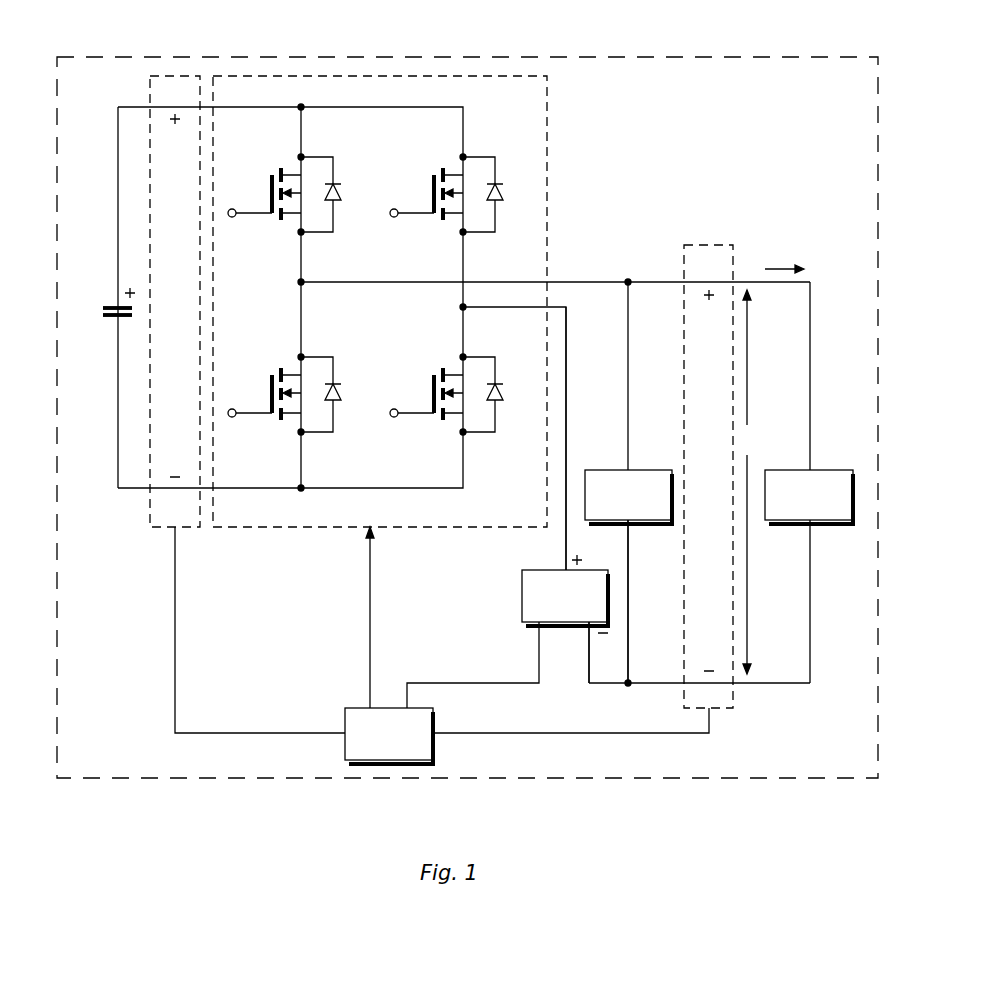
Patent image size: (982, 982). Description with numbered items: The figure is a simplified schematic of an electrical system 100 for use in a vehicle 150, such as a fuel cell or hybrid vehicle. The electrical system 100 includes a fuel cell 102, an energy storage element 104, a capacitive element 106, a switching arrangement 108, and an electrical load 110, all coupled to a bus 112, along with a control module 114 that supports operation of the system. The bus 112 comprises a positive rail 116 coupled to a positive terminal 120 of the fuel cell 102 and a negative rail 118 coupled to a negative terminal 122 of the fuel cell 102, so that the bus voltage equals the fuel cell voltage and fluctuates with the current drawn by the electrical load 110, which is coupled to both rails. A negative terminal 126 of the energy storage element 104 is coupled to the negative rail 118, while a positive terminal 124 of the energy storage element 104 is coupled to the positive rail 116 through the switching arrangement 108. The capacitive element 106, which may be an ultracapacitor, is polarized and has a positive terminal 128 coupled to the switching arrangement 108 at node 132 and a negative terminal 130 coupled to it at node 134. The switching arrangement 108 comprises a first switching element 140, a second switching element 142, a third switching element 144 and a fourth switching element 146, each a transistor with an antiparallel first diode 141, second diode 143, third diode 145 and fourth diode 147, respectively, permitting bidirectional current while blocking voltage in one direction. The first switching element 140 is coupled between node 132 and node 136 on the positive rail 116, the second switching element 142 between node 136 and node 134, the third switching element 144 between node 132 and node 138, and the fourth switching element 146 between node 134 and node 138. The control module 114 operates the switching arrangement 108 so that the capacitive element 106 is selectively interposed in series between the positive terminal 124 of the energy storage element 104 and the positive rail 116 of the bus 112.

The electrical system 100 is at (665, 163).
The fuel cell 102 is at (600, 470).
The energy storage element 104 is at (521, 584).
The capacitive element 106 is at (102, 306).
The switching arrangement 108 is at (548, 137).
The electrical load 110 is at (828, 470).
The bus 112 is at (731, 476).
The control module 114 is at (346, 707).
The positive rail 116 is at (777, 286).
The negative rail 118 is at (779, 682).
The positive terminal 120 is at (629, 470).
The negative terminal 122 is at (630, 524).
The positive terminal 124 is at (564, 568).
The negative terminal 126 is at (586, 624).
The positive terminal 128 is at (114, 305).
The negative terminal 130 is at (112, 318).
The node 132 is at (301, 105).
The node 134 is at (302, 490).
The node 136 is at (300, 281).
The node 138 is at (462, 306).
The first switching element 140 is at (280, 169).
The first diode 141 is at (336, 183).
The second switching element 142 is at (280, 369).
The second diode 143 is at (336, 383).
The third switching element 144 is at (442, 169).
The third diode 145 is at (498, 183).
The fourth switching element 146 is at (442, 369).
The fourth diode 147 is at (498, 383).
The vehicle 150 is at (715, 57).